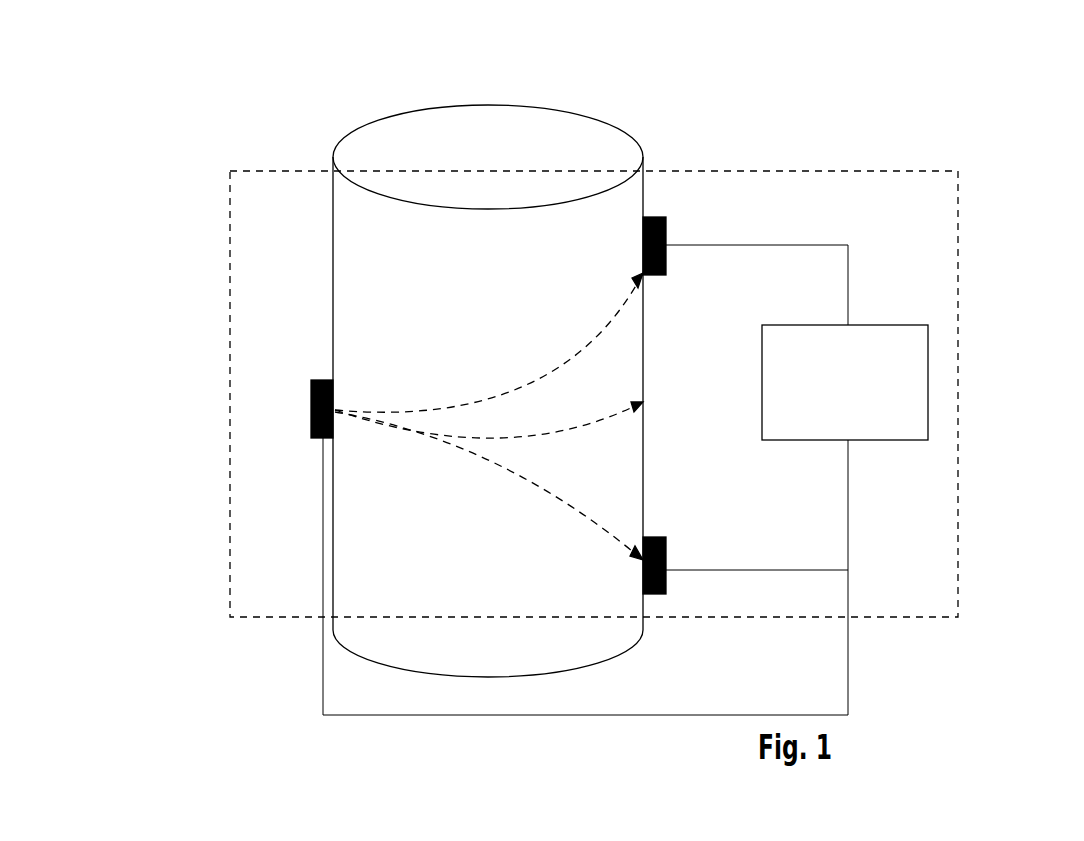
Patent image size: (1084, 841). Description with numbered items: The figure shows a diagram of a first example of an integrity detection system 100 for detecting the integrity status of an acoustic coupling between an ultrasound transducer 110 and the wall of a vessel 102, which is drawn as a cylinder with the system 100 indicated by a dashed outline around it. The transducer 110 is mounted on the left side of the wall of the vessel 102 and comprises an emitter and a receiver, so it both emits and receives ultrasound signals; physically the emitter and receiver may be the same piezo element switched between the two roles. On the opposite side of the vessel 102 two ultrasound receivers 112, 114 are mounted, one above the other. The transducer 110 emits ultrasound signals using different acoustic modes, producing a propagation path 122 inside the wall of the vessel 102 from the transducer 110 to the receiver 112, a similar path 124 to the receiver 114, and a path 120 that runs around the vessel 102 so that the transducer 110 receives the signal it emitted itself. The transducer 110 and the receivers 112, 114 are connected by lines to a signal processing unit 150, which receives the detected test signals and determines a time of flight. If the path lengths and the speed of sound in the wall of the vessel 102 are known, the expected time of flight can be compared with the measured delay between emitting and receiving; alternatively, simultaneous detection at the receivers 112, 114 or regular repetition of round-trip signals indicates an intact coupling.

The integrity detection system 100 is at (787, 171).
The vessel 102 is at (455, 105).
The ultrasound transducer 110 is at (311, 418).
The ultrasound receiver 112 is at (666, 233).
The ultrasound receiver 114 is at (666, 545).
The propagation path 120 is at (607, 420).
The propagation path 122 is at (570, 360).
The propagation path 124 is at (543, 490).
The signal processing unit 150 is at (863, 325).